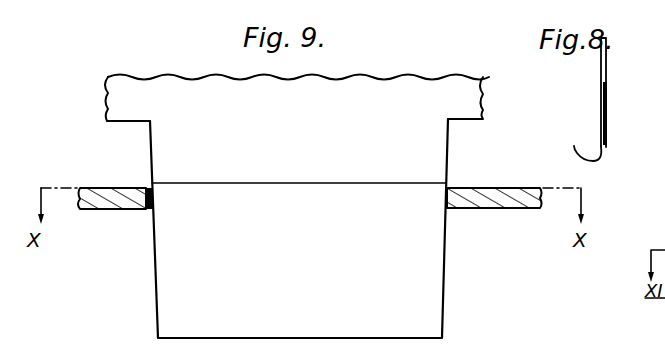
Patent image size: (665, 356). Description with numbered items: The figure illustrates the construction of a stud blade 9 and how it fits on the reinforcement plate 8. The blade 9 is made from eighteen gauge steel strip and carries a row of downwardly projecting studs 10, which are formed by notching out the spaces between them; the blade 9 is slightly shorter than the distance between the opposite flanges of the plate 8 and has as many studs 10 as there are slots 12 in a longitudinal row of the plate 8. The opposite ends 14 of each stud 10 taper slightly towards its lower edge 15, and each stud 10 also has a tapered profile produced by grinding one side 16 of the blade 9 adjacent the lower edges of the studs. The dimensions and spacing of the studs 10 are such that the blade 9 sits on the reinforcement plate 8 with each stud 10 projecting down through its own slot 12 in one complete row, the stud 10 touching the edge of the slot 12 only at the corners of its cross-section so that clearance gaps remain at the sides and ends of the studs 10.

In FIG. 9, the reinforcement plate 8 is at (133, 198).
In FIG. 9, the stud blade 9 is at (257, 137).
In FIG. 8, the stud blade 9 is at (607, 50).
In FIG. 9, the stud 10 is at (300, 269).
In FIG. 8, the stud 10 is at (608, 99).
In FIG. 9, the slot 12 is at (445, 193).
In FIG. 9, the opposite ends of stud 14 is at (156, 278).
In FIG. 9, the lower edge 15 is at (324, 337).
In FIG. 8, the lower edge 15 is at (583, 144).
In FIG. 8, the ground side of blade 16 is at (607, 118).